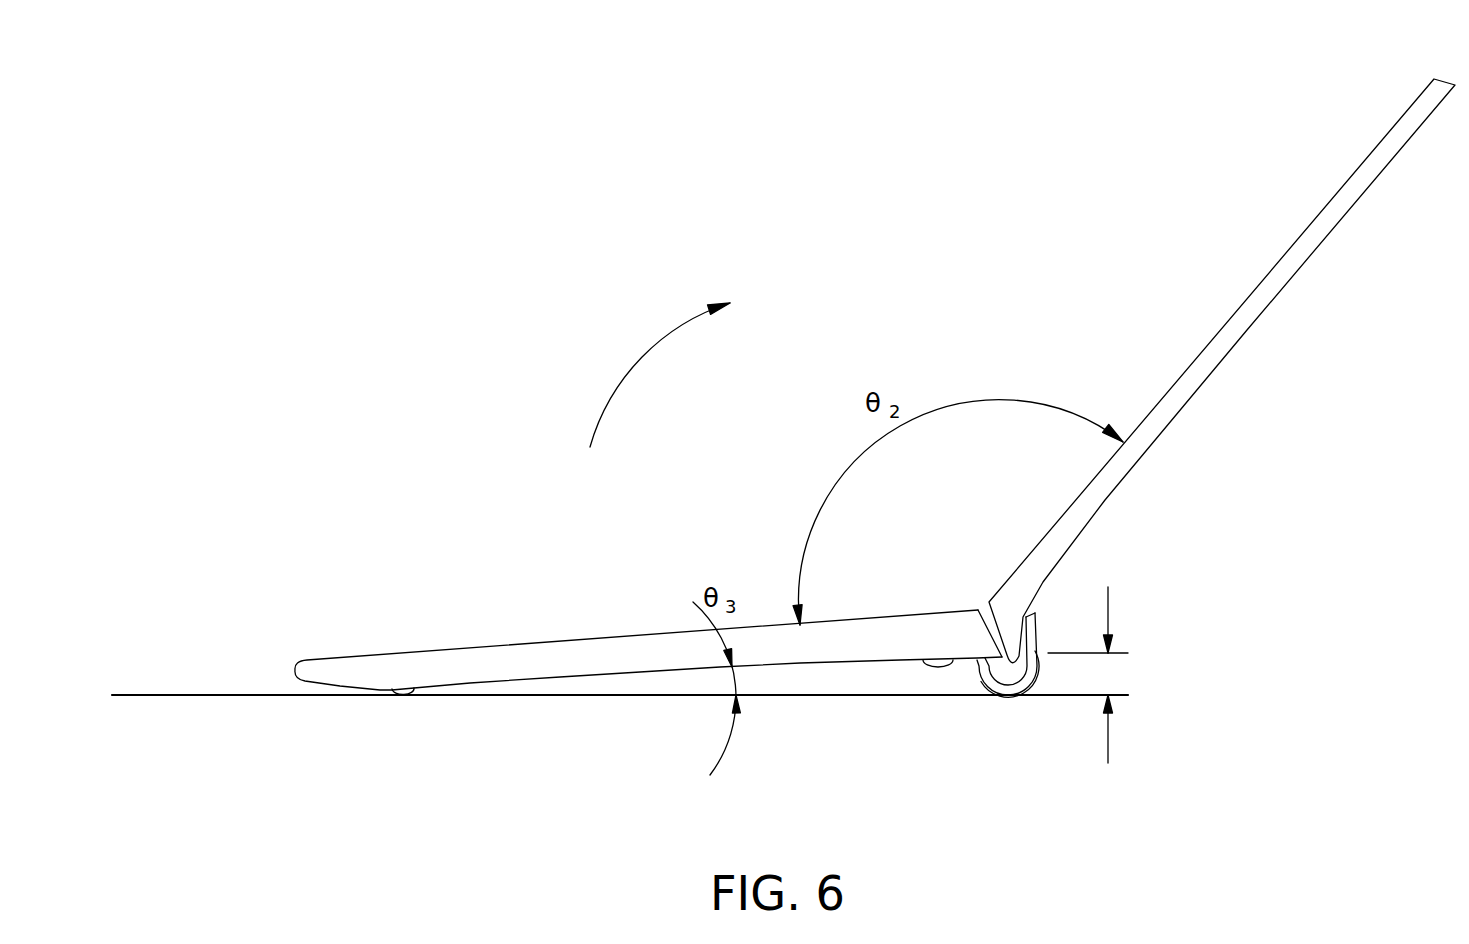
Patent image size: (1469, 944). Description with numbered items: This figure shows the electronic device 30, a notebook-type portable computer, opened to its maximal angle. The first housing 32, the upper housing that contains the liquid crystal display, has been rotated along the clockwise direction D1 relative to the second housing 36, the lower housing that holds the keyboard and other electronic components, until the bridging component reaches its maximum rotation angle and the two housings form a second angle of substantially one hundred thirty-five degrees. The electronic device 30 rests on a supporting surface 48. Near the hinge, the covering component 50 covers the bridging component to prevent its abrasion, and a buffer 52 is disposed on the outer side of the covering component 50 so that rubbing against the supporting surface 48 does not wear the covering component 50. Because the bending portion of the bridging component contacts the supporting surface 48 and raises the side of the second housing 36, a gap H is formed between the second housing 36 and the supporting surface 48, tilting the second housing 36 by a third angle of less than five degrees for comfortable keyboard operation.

The electronic device 30 is at (790, 108).
The first housing 32 is at (1357, 180).
The second housing 36 is at (553, 673).
The supporting surface 48 is at (225, 697).
The covering component 50 is at (975, 678).
The buffer 52 is at (1030, 687).
The clockwise direction D1 is at (660, 375).
The gap H is at (1093, 675).